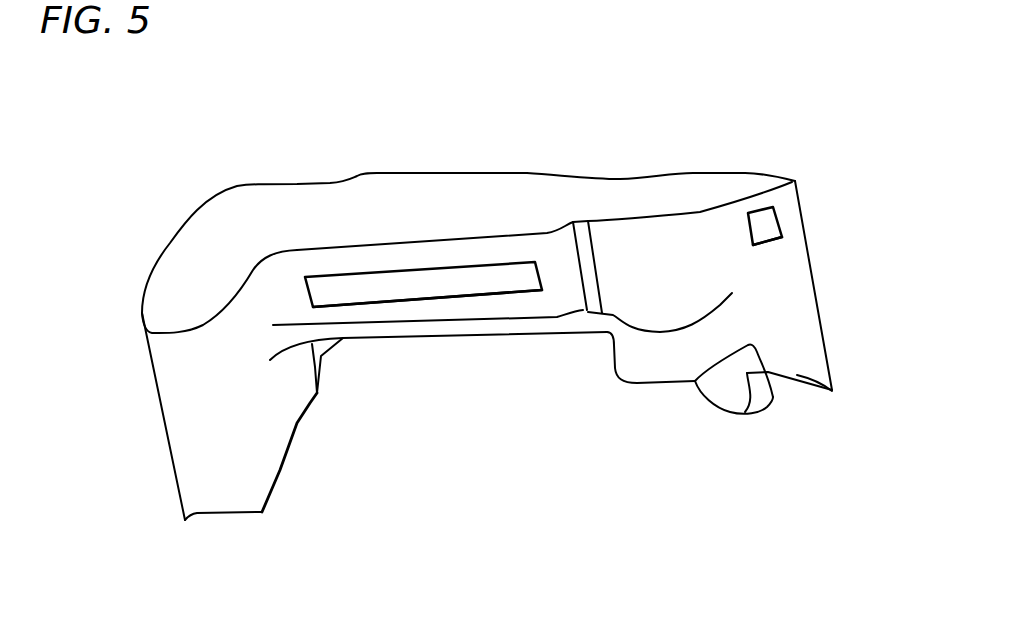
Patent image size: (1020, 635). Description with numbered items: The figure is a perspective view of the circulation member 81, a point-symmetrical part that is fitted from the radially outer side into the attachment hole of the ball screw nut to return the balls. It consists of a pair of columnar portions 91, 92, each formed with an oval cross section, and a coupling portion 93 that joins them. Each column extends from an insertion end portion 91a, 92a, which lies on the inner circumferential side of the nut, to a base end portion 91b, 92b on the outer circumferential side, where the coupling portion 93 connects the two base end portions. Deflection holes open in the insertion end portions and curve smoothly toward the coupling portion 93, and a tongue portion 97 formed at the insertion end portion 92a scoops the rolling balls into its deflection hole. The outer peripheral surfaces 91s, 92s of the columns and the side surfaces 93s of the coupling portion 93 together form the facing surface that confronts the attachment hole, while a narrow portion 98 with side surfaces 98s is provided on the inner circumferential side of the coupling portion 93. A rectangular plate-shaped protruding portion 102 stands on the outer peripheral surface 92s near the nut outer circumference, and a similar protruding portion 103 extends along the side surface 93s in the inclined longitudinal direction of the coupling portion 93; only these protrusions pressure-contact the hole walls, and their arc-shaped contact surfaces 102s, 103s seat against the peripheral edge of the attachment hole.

The circulation member 81 is at (154, 174).
The columnar portion 91 is at (157, 402).
The insertion end portion 91a is at (222, 498).
The base end portion 91b is at (160, 343).
The outer peripheral surface 91s is at (188, 457).
The columnar portion 92 is at (812, 272).
The insertion end portion 92a is at (805, 363).
The base end portion 92b is at (753, 196).
The outer peripheral surface 92s is at (705, 340).
The coupling portion 93 is at (410, 185).
The side surface 93s is at (498, 313).
The tongue portion 97 is at (728, 398).
The narrow portion 98 is at (383, 335).
The side surface 98s is at (435, 327).
The protruding portion 102 is at (779, 220).
The contact surface 102s is at (768, 247).
The protruding portion 103 is at (468, 277).
The contact surface 103s is at (372, 309).